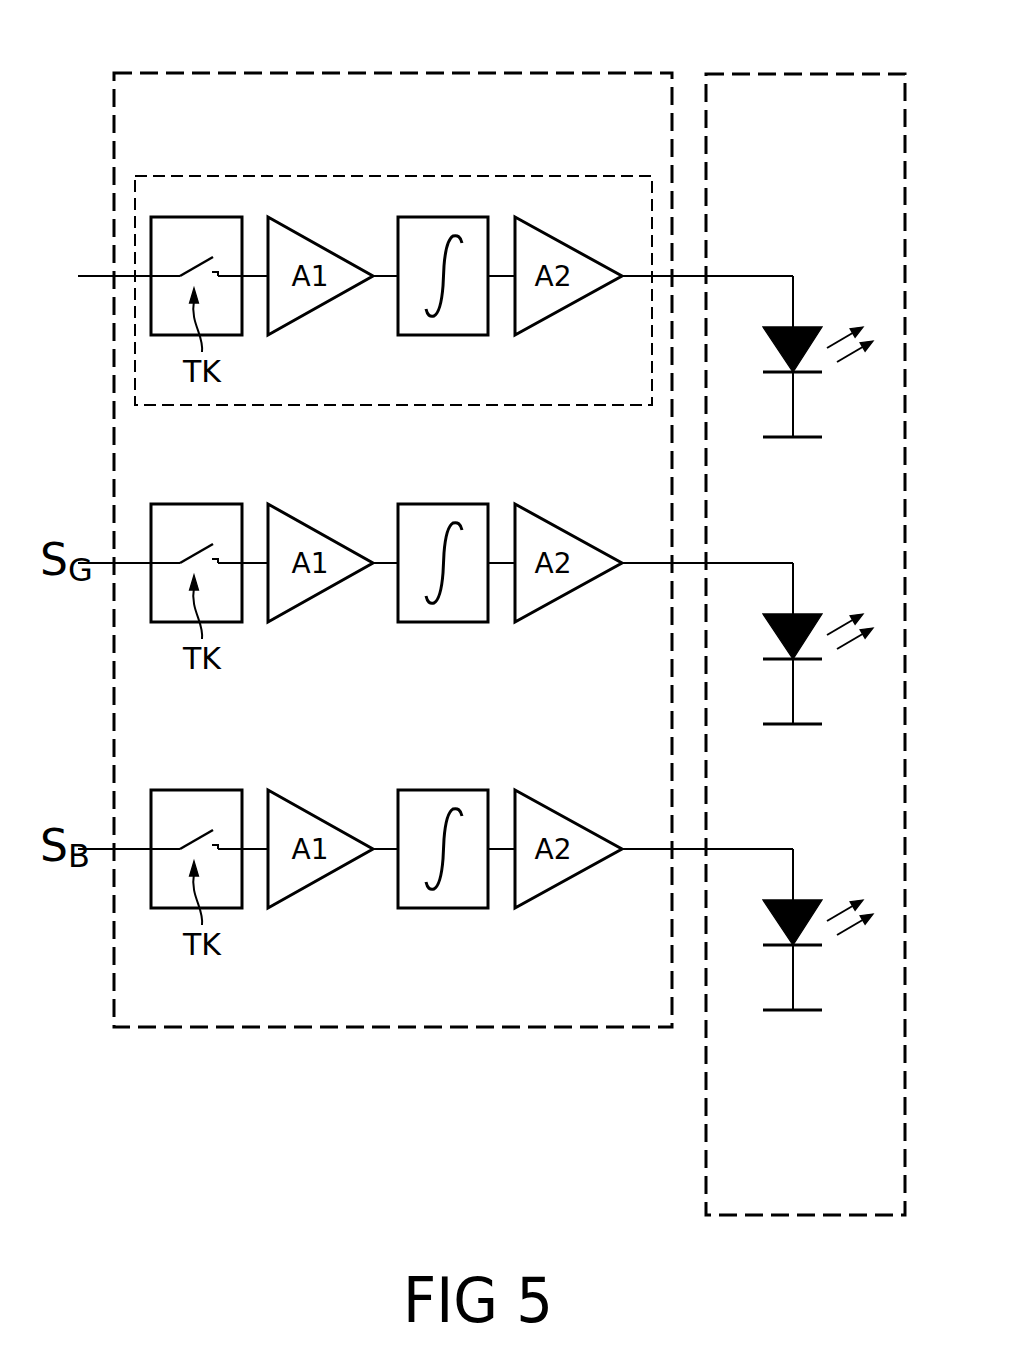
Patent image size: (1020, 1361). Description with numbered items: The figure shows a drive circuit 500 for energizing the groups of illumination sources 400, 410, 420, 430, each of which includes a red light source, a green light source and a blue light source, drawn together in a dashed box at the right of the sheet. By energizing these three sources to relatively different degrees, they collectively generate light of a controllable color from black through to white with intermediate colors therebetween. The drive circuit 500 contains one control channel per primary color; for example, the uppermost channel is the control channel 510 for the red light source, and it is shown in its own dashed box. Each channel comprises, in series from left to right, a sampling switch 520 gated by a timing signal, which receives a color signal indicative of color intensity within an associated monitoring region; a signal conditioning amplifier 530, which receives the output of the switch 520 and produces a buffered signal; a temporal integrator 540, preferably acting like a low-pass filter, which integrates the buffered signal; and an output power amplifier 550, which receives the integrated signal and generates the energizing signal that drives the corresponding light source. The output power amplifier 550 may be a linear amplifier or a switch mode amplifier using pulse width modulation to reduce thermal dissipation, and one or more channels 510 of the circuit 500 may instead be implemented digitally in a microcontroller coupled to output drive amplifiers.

The drive circuit 500 is at (333, 73).
The control channel 510 is at (402, 176).
The sampling switch 520 is at (195, 504).
The signal conditioning amplifier 530 is at (322, 595).
The temporal integrator 540 is at (443, 504).
The output power amplifier 550 is at (568, 597).
The group of illumination sources 400 is at (705, 1142).
The group of illumination sources 410 is at (805, 327).
The group of illumination sources 420 is at (805, 614).
The group of illumination sources 430 is at (805, 900).